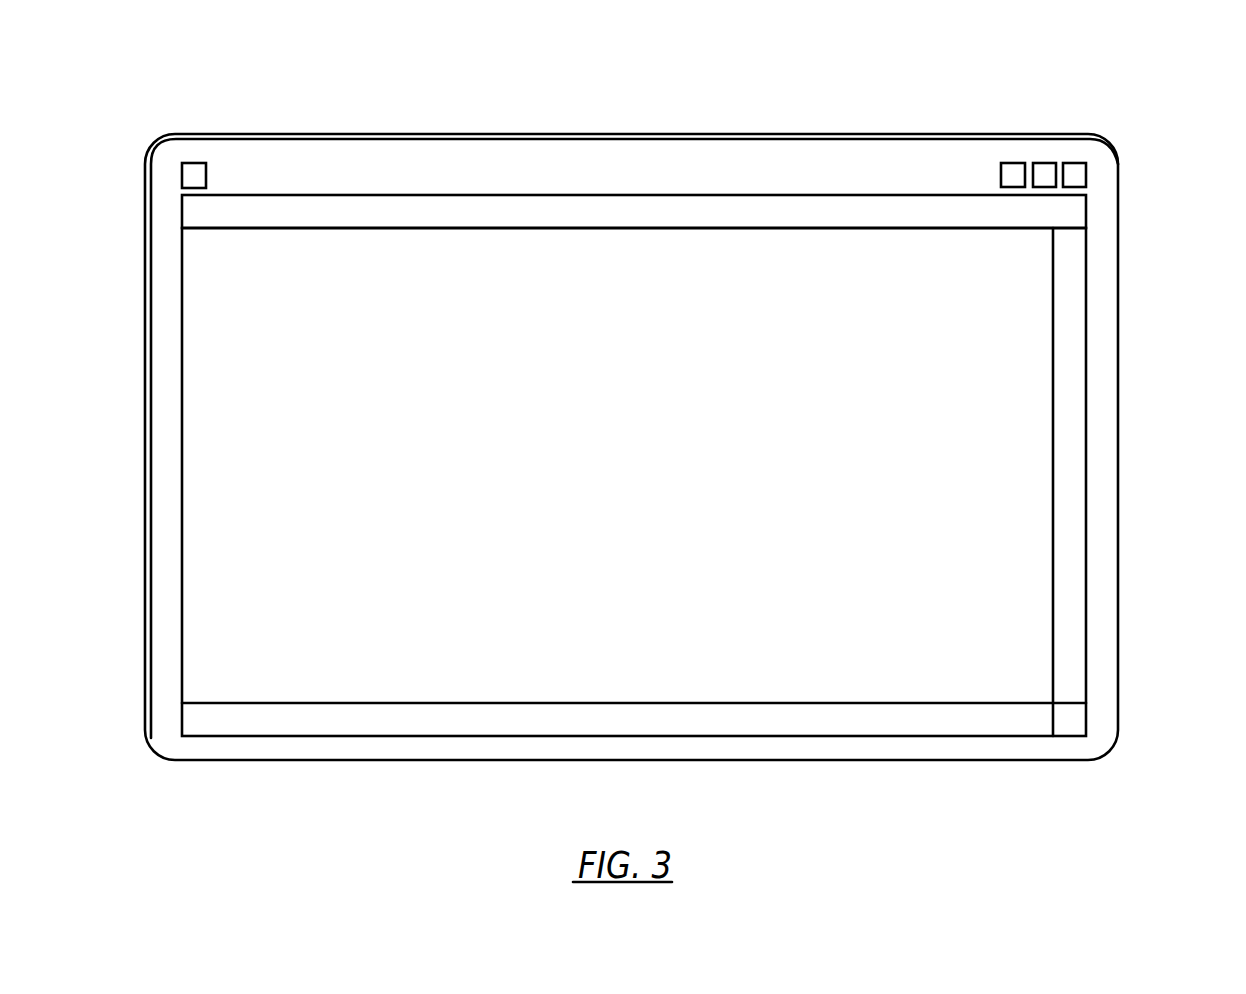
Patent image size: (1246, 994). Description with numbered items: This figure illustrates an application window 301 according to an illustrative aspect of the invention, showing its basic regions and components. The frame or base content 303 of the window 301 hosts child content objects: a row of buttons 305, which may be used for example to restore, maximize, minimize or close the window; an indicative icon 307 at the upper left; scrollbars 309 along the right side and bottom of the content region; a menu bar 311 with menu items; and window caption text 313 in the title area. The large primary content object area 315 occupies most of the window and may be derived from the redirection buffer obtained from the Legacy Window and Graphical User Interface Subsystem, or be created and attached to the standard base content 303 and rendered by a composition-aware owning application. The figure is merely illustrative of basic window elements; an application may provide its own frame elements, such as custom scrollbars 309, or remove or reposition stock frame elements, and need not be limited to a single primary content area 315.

The application window 301 is at (1095, 440).
The frame or base content 303 is at (760, 175).
The buttons 305 is at (1010, 163).
The indicative icon 307 is at (192, 163).
The scrollbars 309 is at (1073, 357).
The menu bar 311 is at (594, 212).
The window caption text 313 is at (318, 162).
The primary content object area 315 is at (885, 250).